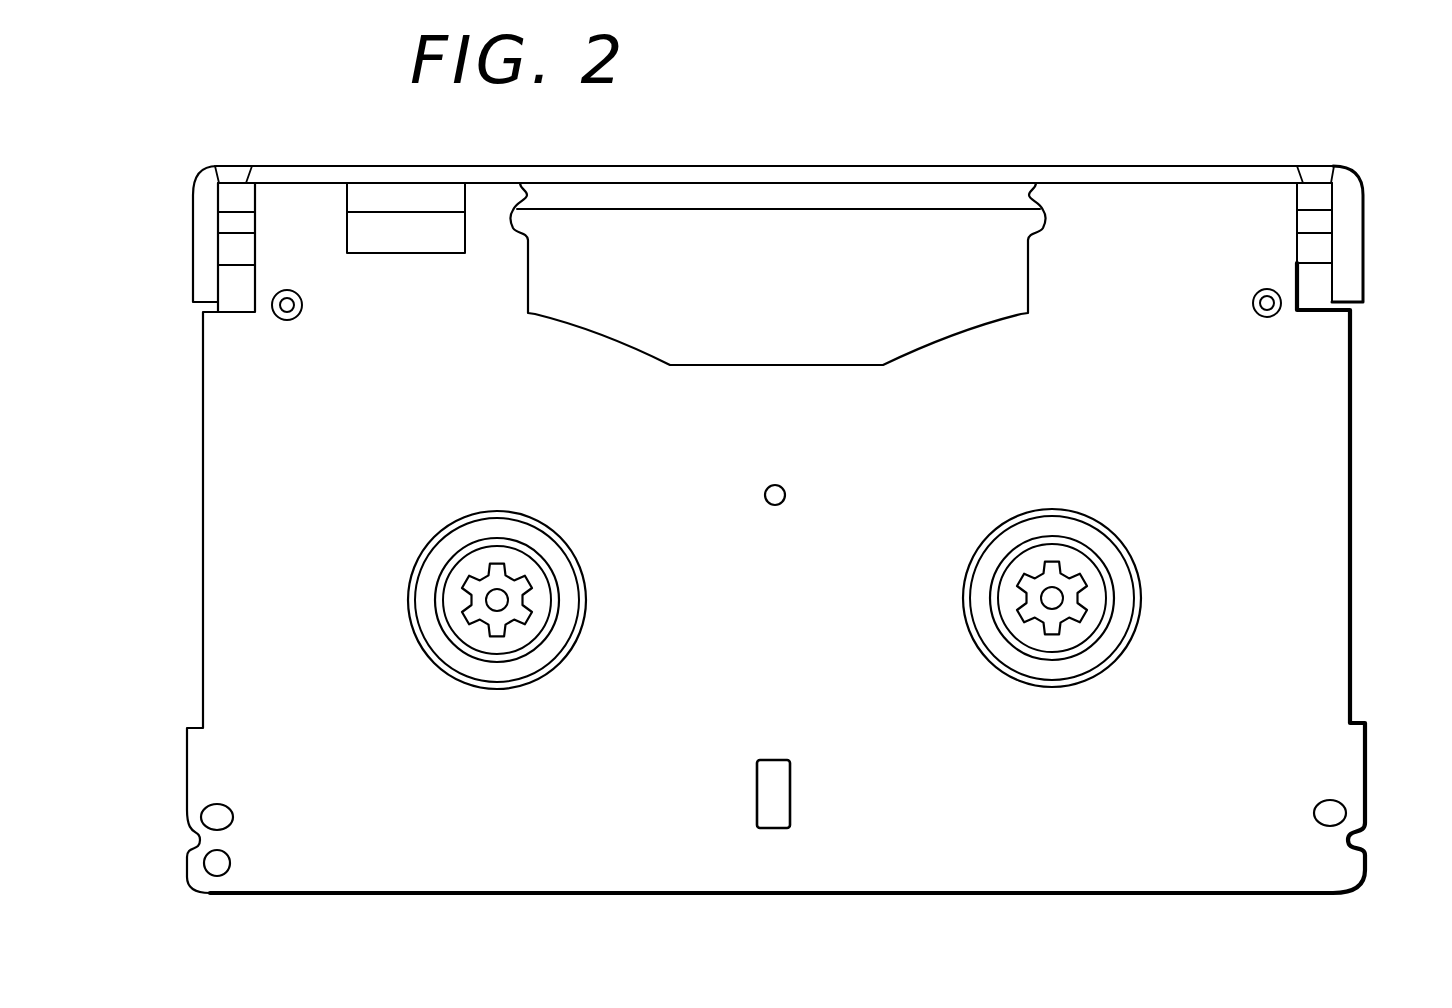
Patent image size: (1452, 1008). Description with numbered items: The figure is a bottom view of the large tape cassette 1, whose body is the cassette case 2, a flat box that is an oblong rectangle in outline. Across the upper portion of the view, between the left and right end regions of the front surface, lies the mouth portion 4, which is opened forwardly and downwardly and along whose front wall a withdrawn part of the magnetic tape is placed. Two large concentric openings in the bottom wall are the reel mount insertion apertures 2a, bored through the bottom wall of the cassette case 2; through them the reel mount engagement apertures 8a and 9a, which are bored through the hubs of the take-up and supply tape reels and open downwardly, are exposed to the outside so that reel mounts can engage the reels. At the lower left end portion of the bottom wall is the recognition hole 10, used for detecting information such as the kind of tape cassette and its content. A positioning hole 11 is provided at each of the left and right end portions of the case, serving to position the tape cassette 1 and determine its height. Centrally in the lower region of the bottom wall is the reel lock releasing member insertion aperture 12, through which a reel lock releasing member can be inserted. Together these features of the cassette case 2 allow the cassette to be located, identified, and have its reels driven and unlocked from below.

The large tape cassette 1 is at (1175, 160).
The cassette case 2 is at (1353, 428).
The reel mount insertion aperture 2a is at (533, 685).
The mouth portion 4 is at (792, 230).
The reel mount engagement aperture 8a is at (1003, 648).
The reel mount engagement aperture 9a is at (462, 655).
The recognition hole 10 is at (200, 872).
The positioning hole 11 is at (198, 815).
The reel lock releasing member insertion aperture 12 is at (791, 800).